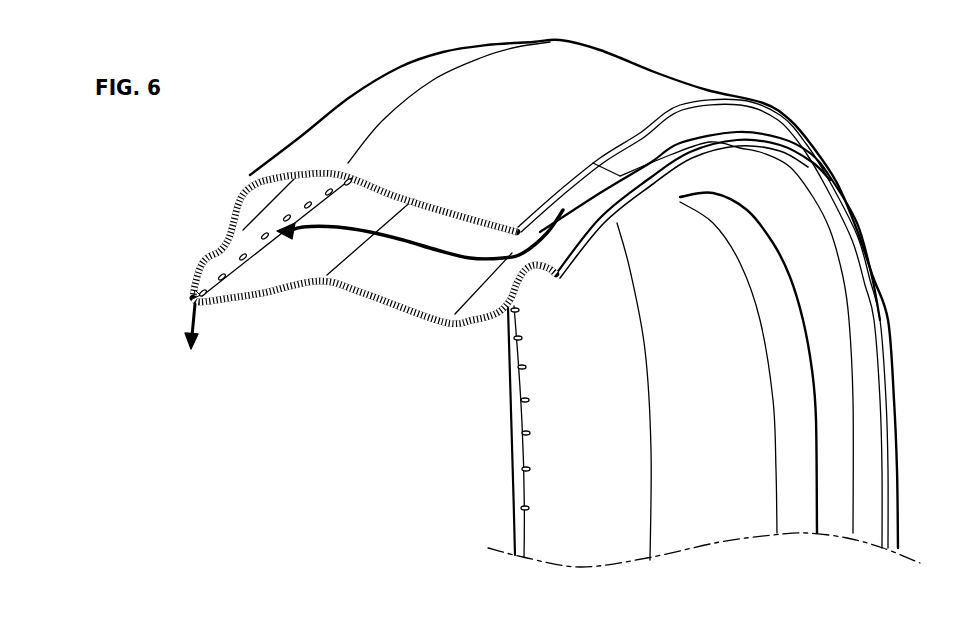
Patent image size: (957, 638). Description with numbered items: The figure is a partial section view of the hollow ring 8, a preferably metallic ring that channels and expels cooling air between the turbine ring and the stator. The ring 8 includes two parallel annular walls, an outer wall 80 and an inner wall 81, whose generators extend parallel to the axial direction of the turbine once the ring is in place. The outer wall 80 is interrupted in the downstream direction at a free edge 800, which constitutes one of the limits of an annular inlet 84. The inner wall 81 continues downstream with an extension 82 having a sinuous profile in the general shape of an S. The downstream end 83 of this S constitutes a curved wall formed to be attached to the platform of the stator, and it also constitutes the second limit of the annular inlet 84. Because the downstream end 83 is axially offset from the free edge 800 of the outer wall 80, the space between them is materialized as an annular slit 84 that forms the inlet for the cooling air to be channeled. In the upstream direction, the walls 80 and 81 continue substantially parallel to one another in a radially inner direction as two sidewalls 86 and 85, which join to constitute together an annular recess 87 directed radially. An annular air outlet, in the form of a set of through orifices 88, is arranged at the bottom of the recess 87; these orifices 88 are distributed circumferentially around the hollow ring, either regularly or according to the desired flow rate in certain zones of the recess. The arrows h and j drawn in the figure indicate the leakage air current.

The hollow ring 8 is at (791, 72).
The outer wall 80 is at (570, 294).
The inner wall 81 is at (420, 256).
The extension 82 is at (503, 323).
The downstream end 83 is at (718, 151).
The annular inlet 84 is at (635, 155).
The sidewall 85 is at (273, 295).
The sidewall 86 is at (293, 176).
The annular recess 87 is at (191, 299).
The through orifices 88 is at (246, 250).
The free edge 800 is at (641, 121).